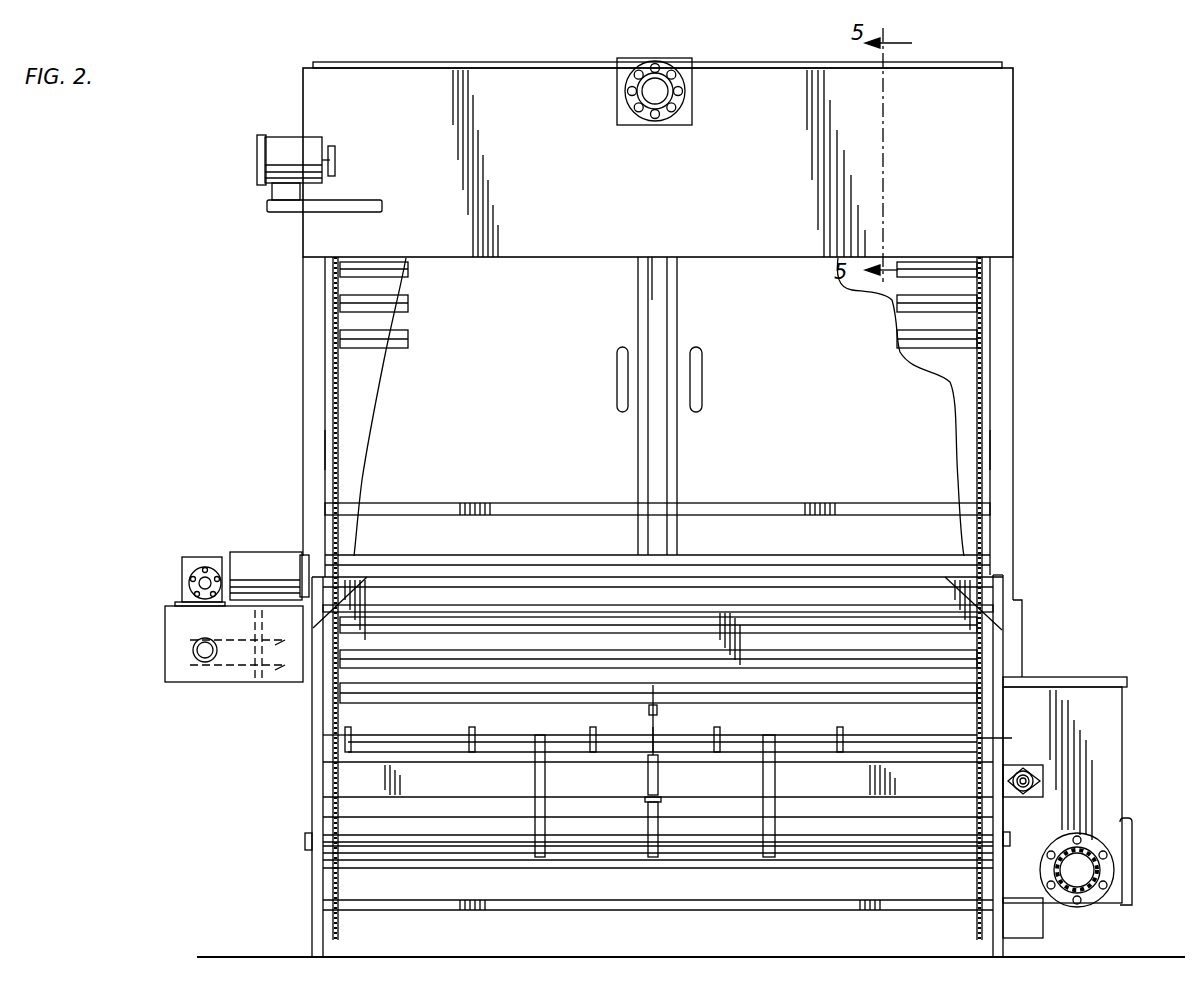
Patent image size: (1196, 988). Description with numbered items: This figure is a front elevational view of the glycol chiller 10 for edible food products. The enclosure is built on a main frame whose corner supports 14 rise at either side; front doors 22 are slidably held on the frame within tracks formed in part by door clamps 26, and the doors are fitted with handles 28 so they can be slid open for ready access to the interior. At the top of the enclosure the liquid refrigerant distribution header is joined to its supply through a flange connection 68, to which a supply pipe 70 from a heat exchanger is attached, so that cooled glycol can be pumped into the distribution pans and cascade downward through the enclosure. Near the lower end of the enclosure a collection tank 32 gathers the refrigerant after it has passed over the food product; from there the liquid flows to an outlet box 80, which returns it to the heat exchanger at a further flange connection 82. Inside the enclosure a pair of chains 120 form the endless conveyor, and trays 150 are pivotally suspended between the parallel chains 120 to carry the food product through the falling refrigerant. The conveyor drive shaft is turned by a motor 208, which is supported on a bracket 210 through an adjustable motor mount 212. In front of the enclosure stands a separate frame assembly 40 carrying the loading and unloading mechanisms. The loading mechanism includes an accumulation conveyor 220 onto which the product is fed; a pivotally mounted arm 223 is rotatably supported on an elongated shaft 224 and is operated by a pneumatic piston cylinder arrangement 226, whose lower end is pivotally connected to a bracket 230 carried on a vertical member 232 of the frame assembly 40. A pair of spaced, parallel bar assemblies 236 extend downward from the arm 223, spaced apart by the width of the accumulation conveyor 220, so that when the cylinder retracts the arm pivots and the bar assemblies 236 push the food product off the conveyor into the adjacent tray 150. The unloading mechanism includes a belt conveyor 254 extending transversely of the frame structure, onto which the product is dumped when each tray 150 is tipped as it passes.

The glycol chiller 10 is at (200, 255).
The corner supports 14 is at (312, 384).
The front doors 22 is at (528, 397).
The door clamps 26 is at (659, 266).
The handles 28 is at (616, 372).
The collection tank 32 is at (876, 895).
The frame assembly 40 is at (1036, 580).
The flange connection 68 is at (688, 60).
The supply pipe 70 is at (680, 100).
The outlet box 80 is at (1100, 706).
The flange connection 82 is at (1116, 862).
The chains 120 is at (335, 445).
The trays 150 is at (386, 272).
The motor 208 is at (288, 147).
The bracket 210 is at (283, 212).
The adjustable motor mount 212 is at (276, 190).
The accumulation conveyor 220 is at (862, 794).
The arm 223 is at (658, 695).
The elongated shaft 224 is at (612, 732).
The pneumatic piston cylinder arrangement 226 is at (655, 750).
The bracket 230 is at (691, 816).
The vertical member 232 is at (312, 806).
The bar assemblies 236 is at (568, 752).
The belt conveyor 254 is at (165, 648).